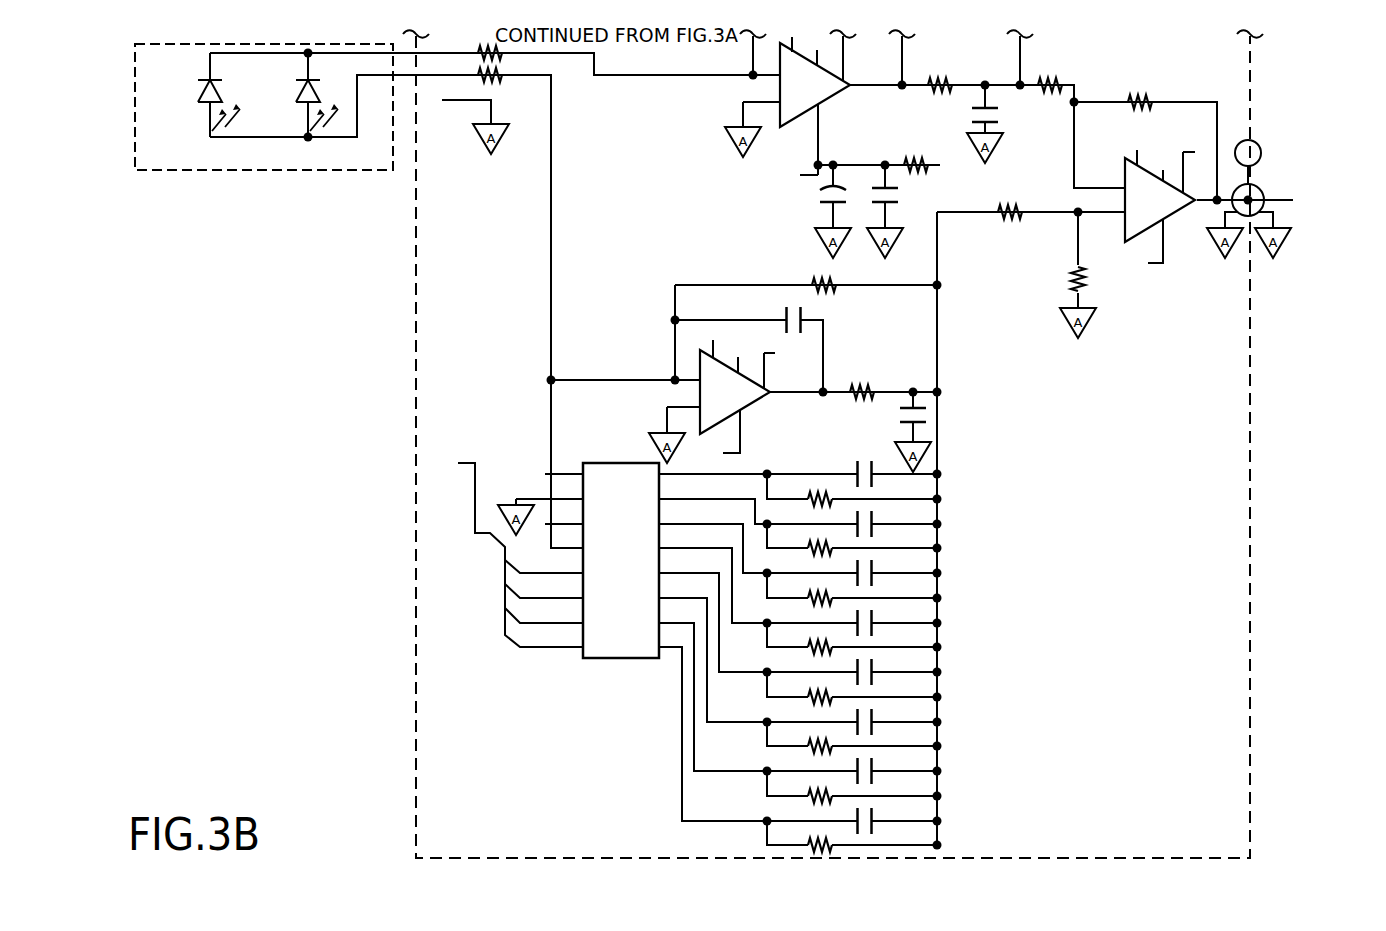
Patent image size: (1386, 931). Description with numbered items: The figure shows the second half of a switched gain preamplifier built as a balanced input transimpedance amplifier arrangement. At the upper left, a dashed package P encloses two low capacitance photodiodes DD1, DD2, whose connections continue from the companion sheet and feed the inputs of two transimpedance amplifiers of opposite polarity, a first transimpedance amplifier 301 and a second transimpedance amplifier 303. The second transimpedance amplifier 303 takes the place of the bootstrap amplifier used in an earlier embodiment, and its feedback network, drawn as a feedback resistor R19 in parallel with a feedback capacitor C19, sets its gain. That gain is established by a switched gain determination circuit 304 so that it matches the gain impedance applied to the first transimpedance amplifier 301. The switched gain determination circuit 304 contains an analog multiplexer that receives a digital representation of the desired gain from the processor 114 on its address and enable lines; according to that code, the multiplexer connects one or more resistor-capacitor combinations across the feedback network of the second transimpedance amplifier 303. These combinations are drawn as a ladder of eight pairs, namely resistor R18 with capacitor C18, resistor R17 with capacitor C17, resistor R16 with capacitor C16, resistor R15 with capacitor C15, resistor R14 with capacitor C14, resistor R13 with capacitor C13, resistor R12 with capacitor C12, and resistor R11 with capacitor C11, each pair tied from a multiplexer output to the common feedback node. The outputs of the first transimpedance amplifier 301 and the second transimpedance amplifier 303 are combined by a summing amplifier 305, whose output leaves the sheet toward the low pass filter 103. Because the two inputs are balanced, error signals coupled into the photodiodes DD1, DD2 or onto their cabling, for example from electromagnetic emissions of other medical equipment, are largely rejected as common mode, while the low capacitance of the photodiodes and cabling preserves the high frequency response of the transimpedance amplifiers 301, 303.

The transimpedance amplifier 301 is at (833, 97).
The transimpedance amplifier 303 is at (744, 368).
The amplifier 305 is at (1170, 218).
The switched gain determination circuit 304 is at (651, 644).
The processor 114 is at (541, 533).
The low pass filter 103 is at (1289, 199).
The photodetector package P is at (457, 296).
The photodiode DD1 is at (296, 82).
The photodiode DD2 is at (199, 83).
The feedback resistor R19 is at (788, 274).
The feedback capacitor C19 is at (825, 310).
The capacitor C18 is at (857, 447).
The resistor R18 is at (787, 490).
The resistor R17 is at (787, 539).
The capacitor C17 is at (893, 515).
The resistor R16 is at (787, 589).
The capacitor C16 is at (893, 564).
The resistor R15 is at (787, 638).
The capacitor C15 is at (893, 614).
The resistor R14 is at (787, 688).
The capacitor C14 is at (893, 663).
The resistor R13 is at (787, 737).
The capacitor C13 is at (893, 713).
The resistor R12 is at (787, 787).
The capacitor C12 is at (893, 762).
The resistor R11 is at (787, 836).
The capacitor C11 is at (893, 812).